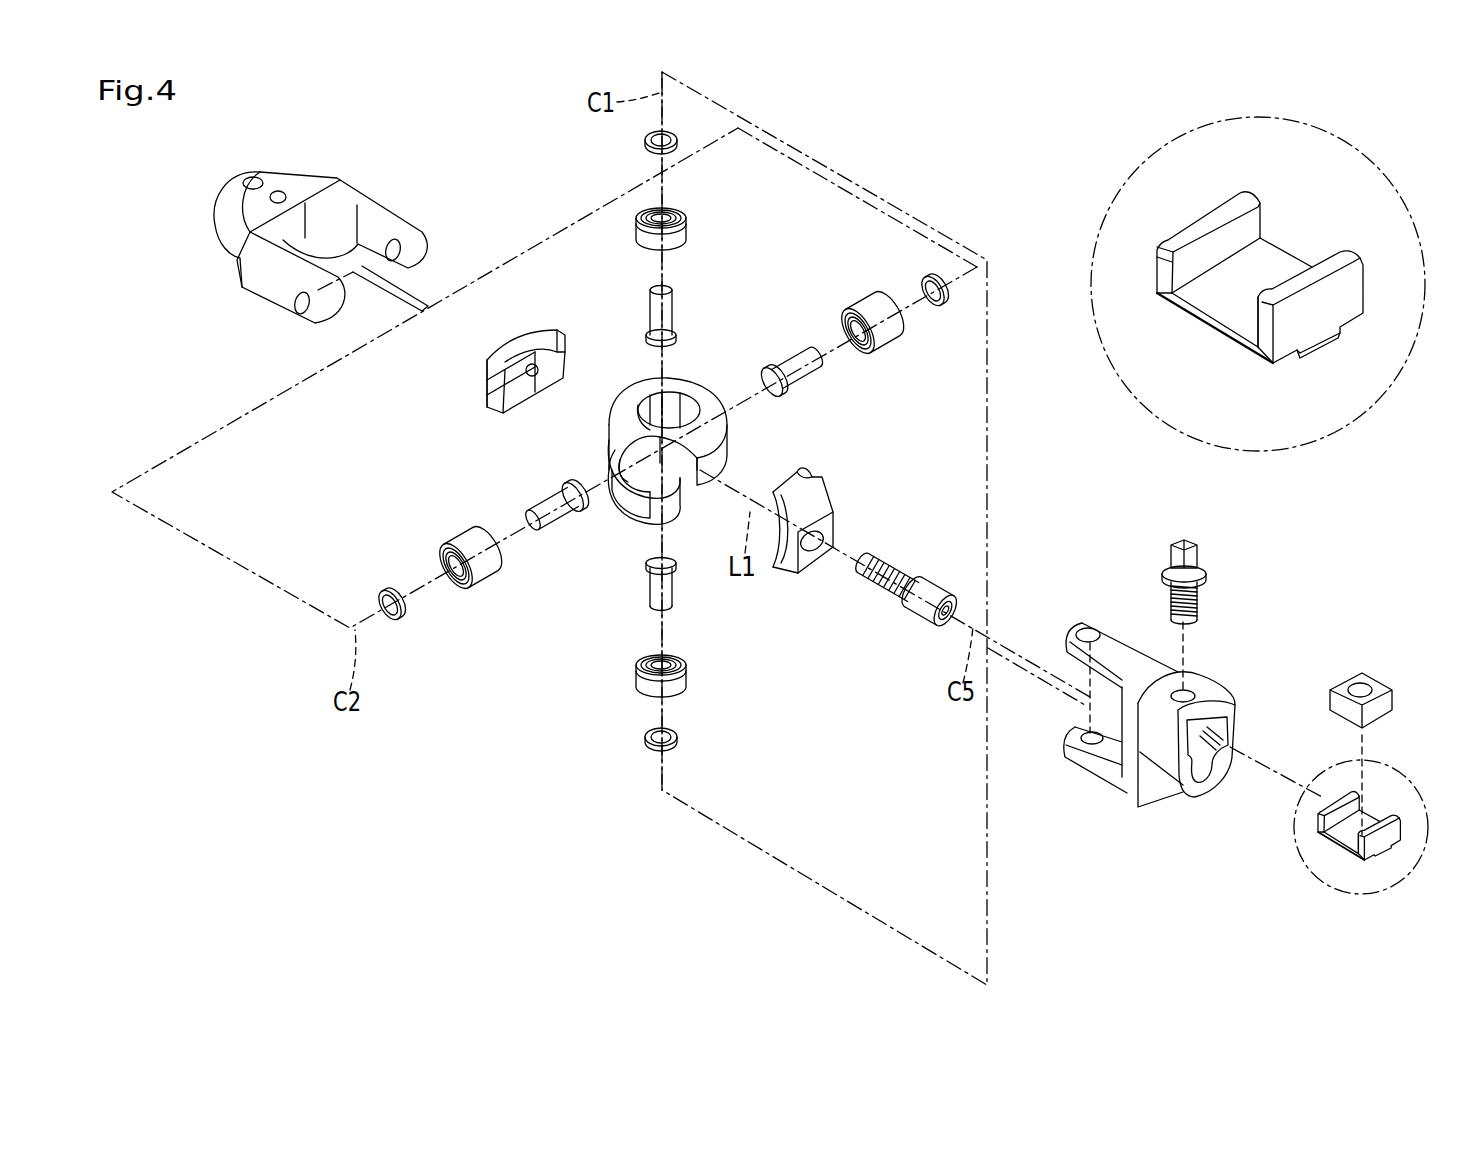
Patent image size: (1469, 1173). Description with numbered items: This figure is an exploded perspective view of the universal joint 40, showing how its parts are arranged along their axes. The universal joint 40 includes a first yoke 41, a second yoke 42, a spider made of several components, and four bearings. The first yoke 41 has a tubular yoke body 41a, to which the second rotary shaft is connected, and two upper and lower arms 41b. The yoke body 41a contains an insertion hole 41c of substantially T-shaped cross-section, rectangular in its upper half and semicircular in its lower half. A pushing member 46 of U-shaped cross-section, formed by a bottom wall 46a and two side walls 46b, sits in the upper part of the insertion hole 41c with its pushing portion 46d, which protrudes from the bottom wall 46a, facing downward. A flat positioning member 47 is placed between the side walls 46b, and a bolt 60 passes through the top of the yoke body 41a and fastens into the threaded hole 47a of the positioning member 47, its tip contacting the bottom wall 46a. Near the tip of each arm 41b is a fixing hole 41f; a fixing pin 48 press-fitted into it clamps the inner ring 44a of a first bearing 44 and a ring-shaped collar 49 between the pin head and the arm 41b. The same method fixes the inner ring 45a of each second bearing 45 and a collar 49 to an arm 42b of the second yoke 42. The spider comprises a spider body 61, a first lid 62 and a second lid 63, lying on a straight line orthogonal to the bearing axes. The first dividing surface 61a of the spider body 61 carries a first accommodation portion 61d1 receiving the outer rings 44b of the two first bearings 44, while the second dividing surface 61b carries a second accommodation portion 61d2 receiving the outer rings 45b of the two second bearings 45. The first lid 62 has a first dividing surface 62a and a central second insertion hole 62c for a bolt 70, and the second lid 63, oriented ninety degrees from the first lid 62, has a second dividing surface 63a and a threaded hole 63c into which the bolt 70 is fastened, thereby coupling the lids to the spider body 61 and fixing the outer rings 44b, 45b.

The universal joint 40 is at (907, 148).
The first yoke 41 is at (1171, 692).
The yoke body 41a is at (1238, 723).
The arms 41b is at (1077, 623).
The insertion hole 41c is at (1228, 763).
The fixing hole 41f is at (1100, 637).
The second yoke 42 is at (349, 246).
The arm 42b is at (405, 242).
The first bearing 44 is at (663, 454).
The inner ring 44a is at (678, 654).
The outer ring 44b is at (684, 678).
The second bearing 45 is at (677, 446).
The inner ring 45a is at (843, 320).
The outer ring 45b is at (872, 307).
The pushing member 46 is at (1280, 505).
The bottom wall 46a is at (1203, 322).
The side walls 46b is at (1265, 222).
The pushing portion 46d is at (1321, 350).
The positioning member 47 is at (1366, 692).
The threaded hole 47a is at (1352, 688).
The fixing pin 48 is at (676, 312).
The collar 49 is at (645, 142).
The bolt 60 is at (1205, 555).
The spider body 61 is at (692, 447).
The first dividing surface 61a is at (688, 403).
The second dividing surface 61b is at (618, 455).
The first accommodation portion 61d1 is at (643, 400).
The second accommodation portion 61d2 is at (638, 503).
The first lid 62 is at (858, 536).
The first dividing surface 62a is at (803, 476).
The second insertion hole 62c is at (813, 556).
The second lid 63 is at (478, 358).
The second dividing surface 63a is at (490, 385).
The threaded hole 63c is at (534, 378).
The bolt 70 is at (930, 585).